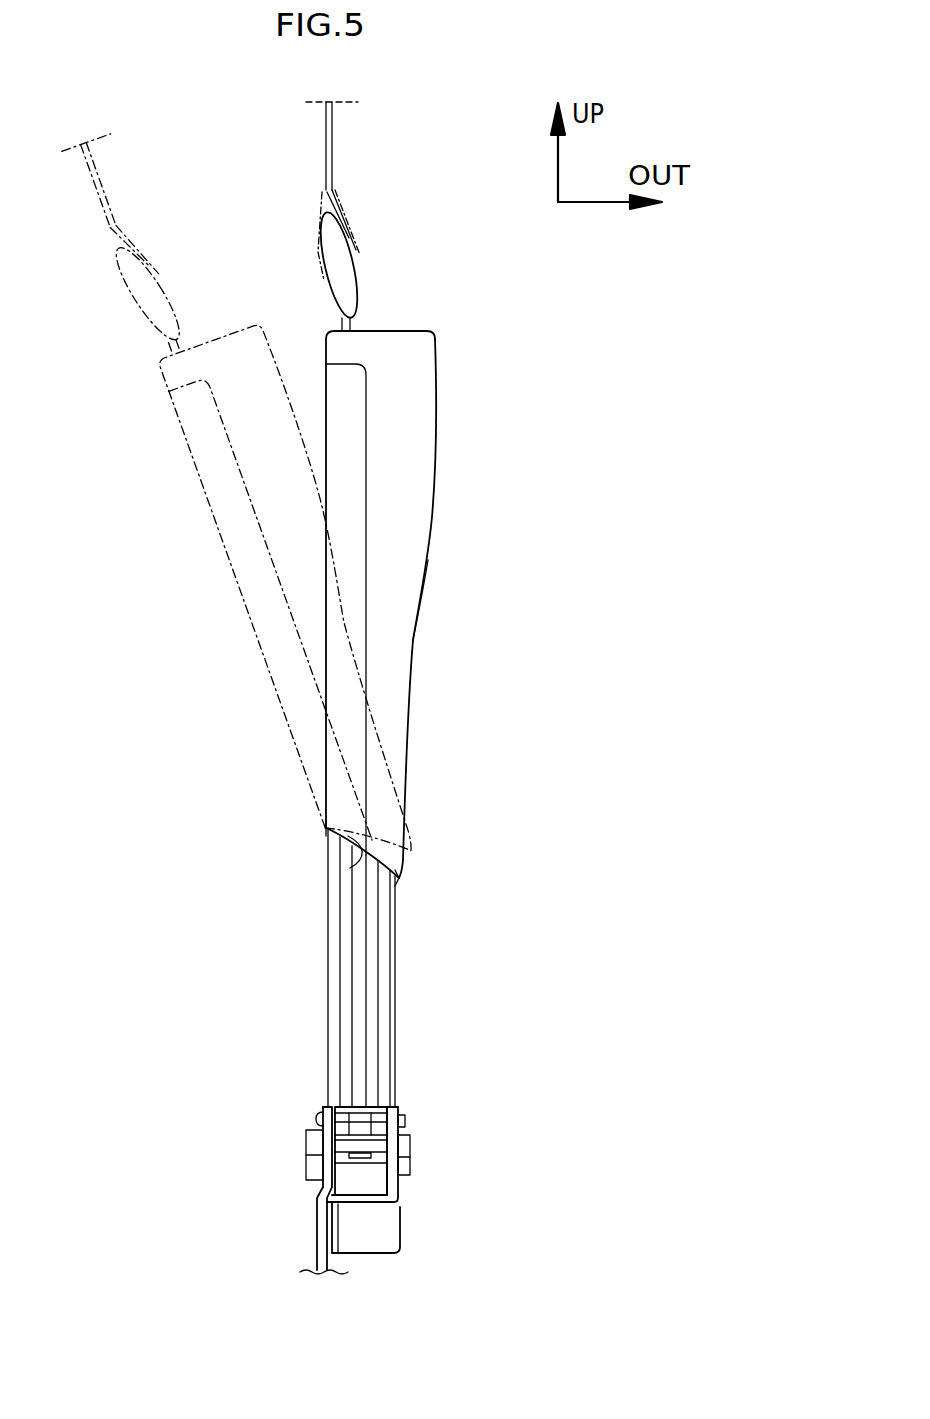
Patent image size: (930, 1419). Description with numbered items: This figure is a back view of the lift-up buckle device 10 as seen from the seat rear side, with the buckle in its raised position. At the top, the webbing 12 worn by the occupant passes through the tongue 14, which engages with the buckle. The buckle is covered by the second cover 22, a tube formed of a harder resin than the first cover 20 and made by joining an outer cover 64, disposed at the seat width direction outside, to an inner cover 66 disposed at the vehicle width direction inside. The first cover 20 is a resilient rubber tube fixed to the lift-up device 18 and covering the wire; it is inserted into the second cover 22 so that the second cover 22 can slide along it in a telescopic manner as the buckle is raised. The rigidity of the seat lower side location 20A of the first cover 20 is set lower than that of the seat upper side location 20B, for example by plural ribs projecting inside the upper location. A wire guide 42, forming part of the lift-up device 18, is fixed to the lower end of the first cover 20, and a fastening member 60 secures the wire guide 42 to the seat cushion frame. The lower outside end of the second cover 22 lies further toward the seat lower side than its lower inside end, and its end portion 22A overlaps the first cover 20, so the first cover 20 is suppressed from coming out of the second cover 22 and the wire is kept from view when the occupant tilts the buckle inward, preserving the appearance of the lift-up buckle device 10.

The lift-up buckle device 10 is at (575, 362).
The webbing 12 is at (333, 152).
The tongue 14 is at (360, 277).
The lift-up device 18 is at (375, 1190).
The first cover 20 is at (339, 967).
The seat lower side location 20A is at (328, 1068).
The seat upper side location 20B is at (325, 898).
The second cover 22 is at (440, 517).
The end portion 22A is at (400, 858).
The wire guide 42 is at (382, 1230).
The fastening member 60 is at (317, 1240).
The outer cover 64 is at (423, 583).
The inner cover 66 is at (326, 398).